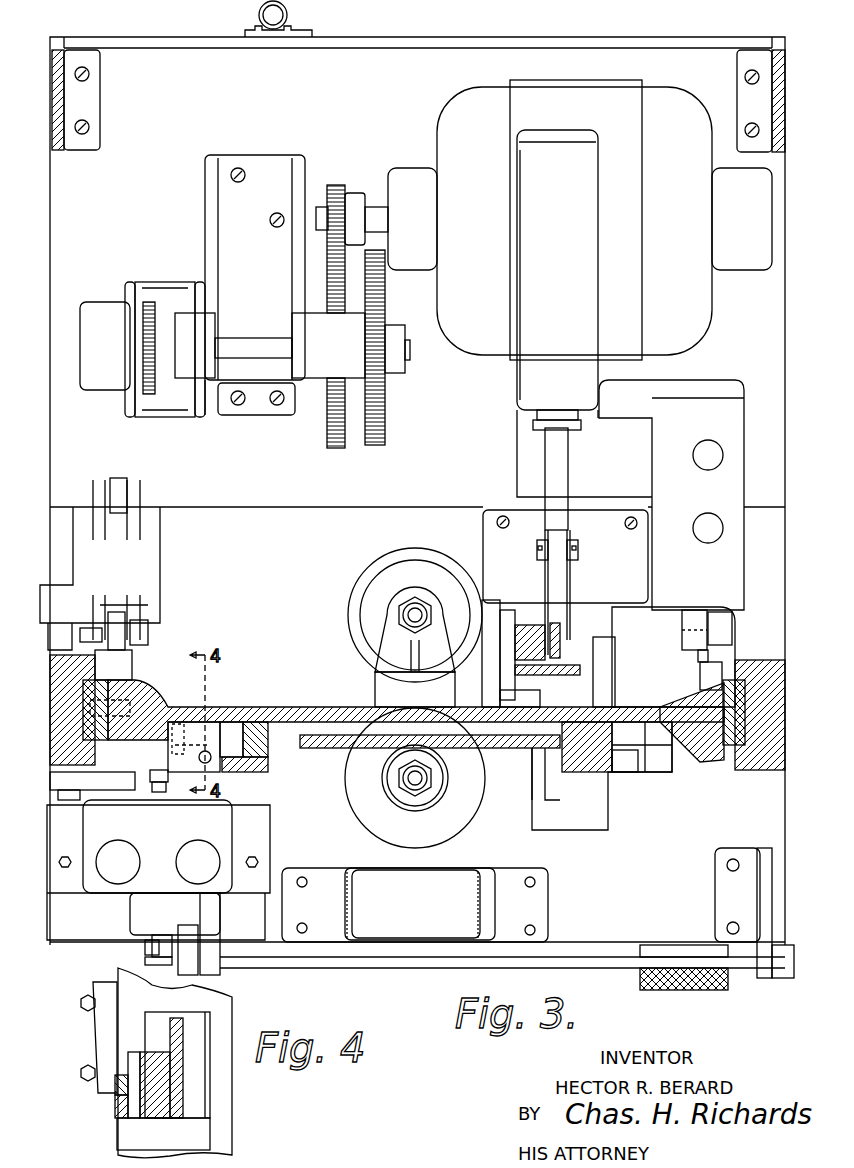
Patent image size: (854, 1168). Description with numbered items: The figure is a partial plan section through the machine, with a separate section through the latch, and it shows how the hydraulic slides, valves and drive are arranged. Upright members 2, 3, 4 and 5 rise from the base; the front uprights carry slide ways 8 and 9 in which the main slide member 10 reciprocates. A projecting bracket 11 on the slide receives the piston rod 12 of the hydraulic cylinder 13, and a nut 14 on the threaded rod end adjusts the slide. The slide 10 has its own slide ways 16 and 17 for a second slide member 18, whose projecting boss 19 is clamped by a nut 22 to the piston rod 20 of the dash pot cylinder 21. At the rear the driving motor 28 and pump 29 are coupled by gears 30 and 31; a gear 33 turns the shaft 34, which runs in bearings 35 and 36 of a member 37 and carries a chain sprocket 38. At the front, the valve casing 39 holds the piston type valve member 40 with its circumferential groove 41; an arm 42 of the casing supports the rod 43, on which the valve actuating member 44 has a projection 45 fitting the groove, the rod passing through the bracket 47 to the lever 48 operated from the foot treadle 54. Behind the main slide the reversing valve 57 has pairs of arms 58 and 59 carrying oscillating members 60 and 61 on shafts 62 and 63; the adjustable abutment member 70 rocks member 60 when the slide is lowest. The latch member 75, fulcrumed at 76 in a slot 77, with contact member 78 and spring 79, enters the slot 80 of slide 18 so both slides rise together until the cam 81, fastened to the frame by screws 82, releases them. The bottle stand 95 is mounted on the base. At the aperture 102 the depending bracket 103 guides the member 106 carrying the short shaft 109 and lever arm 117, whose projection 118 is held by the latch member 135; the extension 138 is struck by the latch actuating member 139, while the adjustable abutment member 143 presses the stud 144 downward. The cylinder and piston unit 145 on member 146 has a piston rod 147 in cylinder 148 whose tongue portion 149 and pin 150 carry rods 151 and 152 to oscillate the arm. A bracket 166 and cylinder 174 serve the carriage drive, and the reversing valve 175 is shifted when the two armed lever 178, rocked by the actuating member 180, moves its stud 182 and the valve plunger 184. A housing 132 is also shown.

In FIG. 3, the upright member 2 is at (774, 698).
In FIG. 3, the upright member 3 is at (58, 706).
In FIG. 3, the upright member 4 is at (52, 90).
In FIG. 3, the upright member 5 is at (785, 95).
In FIG. 3, the slide way 8 is at (752, 734).
In FIG. 3, the slide way 9 is at (62, 735).
In FIG. 3, the main slide member 10 is at (242, 722).
In FIG. 4, the main slide member 10 is at (195, 1092).
In FIG. 3, the projecting bracket 11 is at (390, 660).
In FIG. 3, the piston rod 12 is at (410, 605).
In FIG. 3, the hydraulic cylinder 13 is at (348, 598).
In FIG. 3, the nut 14 is at (400, 612).
In FIG. 3, the slide way 16 is at (590, 760).
In FIG. 3, the slide way 17 is at (240, 730).
In FIG. 3, the slide member 18 is at (505, 749).
In FIG. 3, the projecting boss 19 is at (395, 760).
In FIG. 3, the piston rod 20 is at (400, 784).
In FIG. 3, the cylinder 21 is at (460, 812).
In FIG. 3, the nut 22 is at (415, 800).
In FIG. 3, the driving motor 28 is at (695, 318).
In FIG. 3, the pump 29 is at (166, 296).
In FIG. 3, the gear 30 is at (336, 185).
In FIG. 3, the gear 31 is at (327, 446).
In FIG. 3, the gear 33 is at (385, 438).
In FIG. 3, the shaft 34 is at (410, 352).
In FIG. 3, the bearing 35 is at (314, 360).
In FIG. 3, the bearing 36 is at (180, 352).
In FIG. 3, the member 37 is at (265, 172).
In FIG. 3, the chain sprocket 38 is at (140, 387).
In FIG. 3, the valve casing 39 is at (166, 852).
In FIG. 3, the valve member 40 is at (150, 966).
In FIG. 3, the circumferential groove 41 is at (145, 948).
In FIG. 3, the arm 42 is at (220, 932).
In FIG. 3, the rod 43 is at (380, 970).
In FIG. 3, the valve actuating member 44 is at (200, 966).
In FIG. 3, the projection 45 is at (170, 940).
In FIG. 3, the bracket 47 is at (715, 902).
In FIG. 3, the lever 48 is at (783, 980).
In FIG. 3, the foot treadle 54 is at (688, 991).
In FIG. 3, the reversing valve 57 is at (150, 573).
In FIG. 3, the arms 58 is at (135, 614).
In FIG. 3, the arms 59 is at (140, 502).
In FIG. 3, the oscillating member 60 is at (148, 632).
In FIG. 3, the oscillating member 61 is at (125, 478).
In FIG. 3, the shaft 62 is at (80, 636).
In FIG. 3, the shaft 63 is at (93, 492).
In FIG. 3, the adjustable abutment member 70 is at (132, 670).
In FIG. 3, the latch member 75 is at (150, 774).
In FIG. 4, the latch member 75 is at (155, 1119).
In FIG. 3, the fulcrum 76 is at (200, 762).
In FIG. 4, the fulcrum 76 is at (118, 1108).
In FIG. 3, the slot 77 is at (168, 754).
In FIG. 3, the contact member 78 is at (160, 784).
In FIG. 4, the contact member 78 is at (115, 1090).
In FIG. 3, the spring 79 is at (180, 720).
In FIG. 3, the slot 80 is at (268, 760).
In FIG. 3, the cam 81 is at (52, 782).
In FIG. 4, the cam 81 is at (100, 1030).
In FIG. 3, the screws 82 is at (62, 800).
In FIG. 3, the bottle stand 95 is at (546, 906).
In FIG. 3, the aperture 102 is at (664, 676).
In FIG. 3, the depending bracket 103 is at (488, 512).
In FIG. 3, the member 106 is at (508, 612).
In FIG. 3, the short shaft 109 is at (503, 666).
In FIG. 3, the lever arm 117 is at (525, 638).
In FIG. 3, the projection 118 is at (560, 686).
In FIG. 3, the housing 132 is at (592, 830).
In FIG. 3, the latch member 135 is at (546, 798).
In FIG. 3, the extension 138 is at (630, 760).
In FIG. 3, the latch actuating member 139 is at (672, 758).
In FIG. 3, the adjustable abutment member 143 is at (608, 682).
In FIG. 3, the stud 144 is at (615, 652).
In FIG. 3, the cylinder and piston unit 145 is at (548, 288).
In FIG. 3, the member 146 is at (528, 450).
In FIG. 3, the piston rod 147 is at (565, 472).
In FIG. 3, the cylinder 148 is at (598, 342).
In FIG. 3, the tongue portion 149 is at (565, 546).
In FIG. 3, the pin 150 is at (578, 554).
In FIG. 3, the rod 151 is at (546, 576).
In FIG. 3, the rod 152 is at (578, 580).
In FIG. 3, the bracket 166 is at (160, 38).
In FIG. 3, the cylinder 174 is at (290, 16).
In FIG. 3, the reversing valve 175 is at (735, 568).
In FIG. 3, the two armed lever 178 is at (732, 632).
In FIG. 3, the actuating member 180 is at (706, 682).
In FIG. 3, the stud 182 is at (696, 626).
In FIG. 3, the valve plunger 184 is at (698, 656).